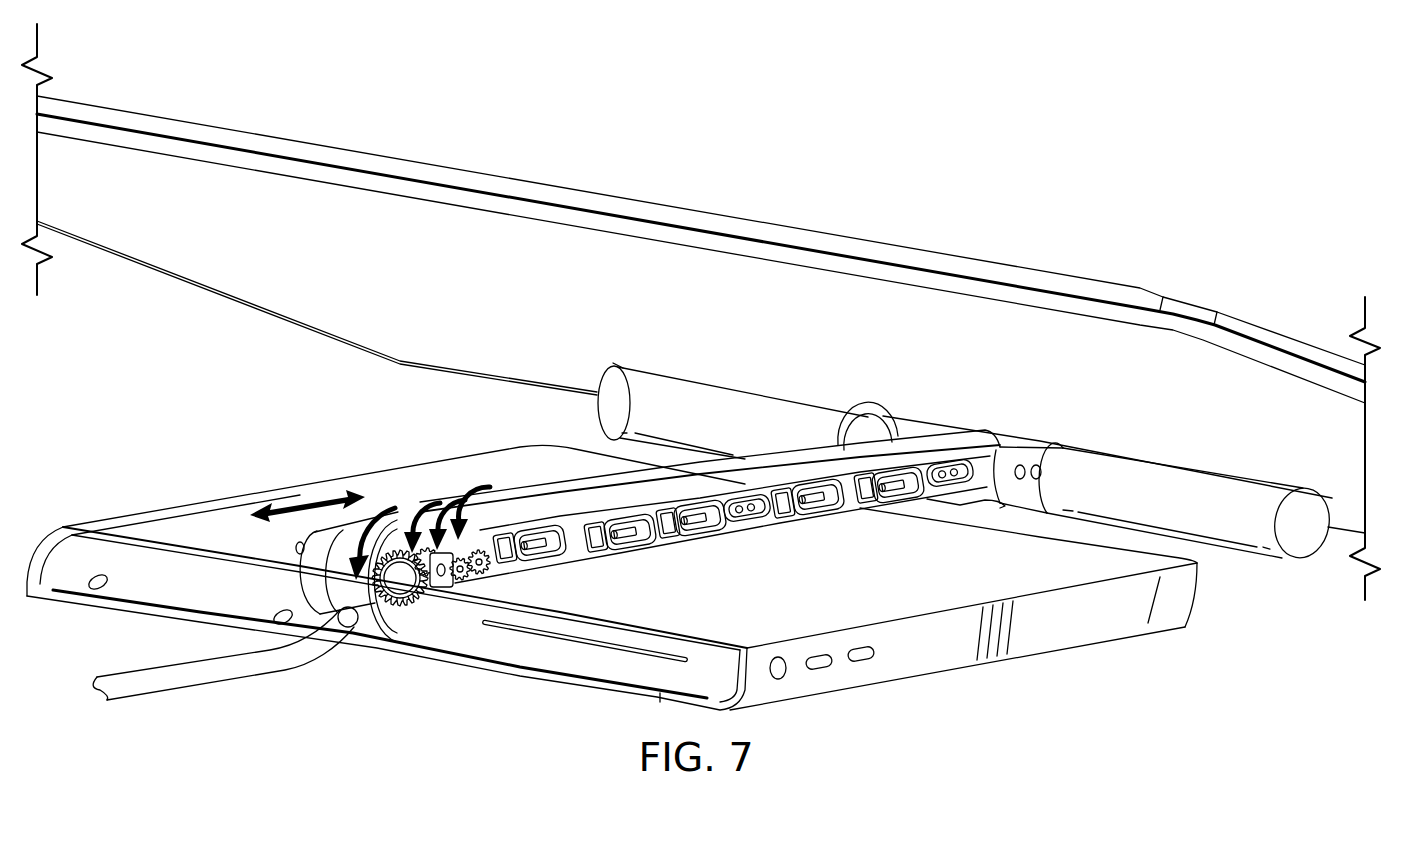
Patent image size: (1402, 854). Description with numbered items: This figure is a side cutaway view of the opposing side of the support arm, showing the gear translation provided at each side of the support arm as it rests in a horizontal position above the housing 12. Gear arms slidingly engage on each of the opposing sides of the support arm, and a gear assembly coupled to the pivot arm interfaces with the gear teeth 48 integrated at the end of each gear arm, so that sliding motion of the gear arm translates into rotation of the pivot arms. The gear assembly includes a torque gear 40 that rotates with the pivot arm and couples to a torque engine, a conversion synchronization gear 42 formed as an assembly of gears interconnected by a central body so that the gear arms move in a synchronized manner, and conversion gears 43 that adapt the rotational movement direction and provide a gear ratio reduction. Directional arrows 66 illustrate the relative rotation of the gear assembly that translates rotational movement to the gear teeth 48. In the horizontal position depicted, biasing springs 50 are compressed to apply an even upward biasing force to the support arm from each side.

The housing 12 is at (1067, 648).
The torque gear 40 is at (403, 600).
The conversion synchronization gear 42 is at (455, 585).
The conversion gears 43 is at (488, 568).
The gear teeth 48 is at (488, 550).
The biasing springs 50 is at (740, 515).
The directional arrows 66 is at (337, 498).